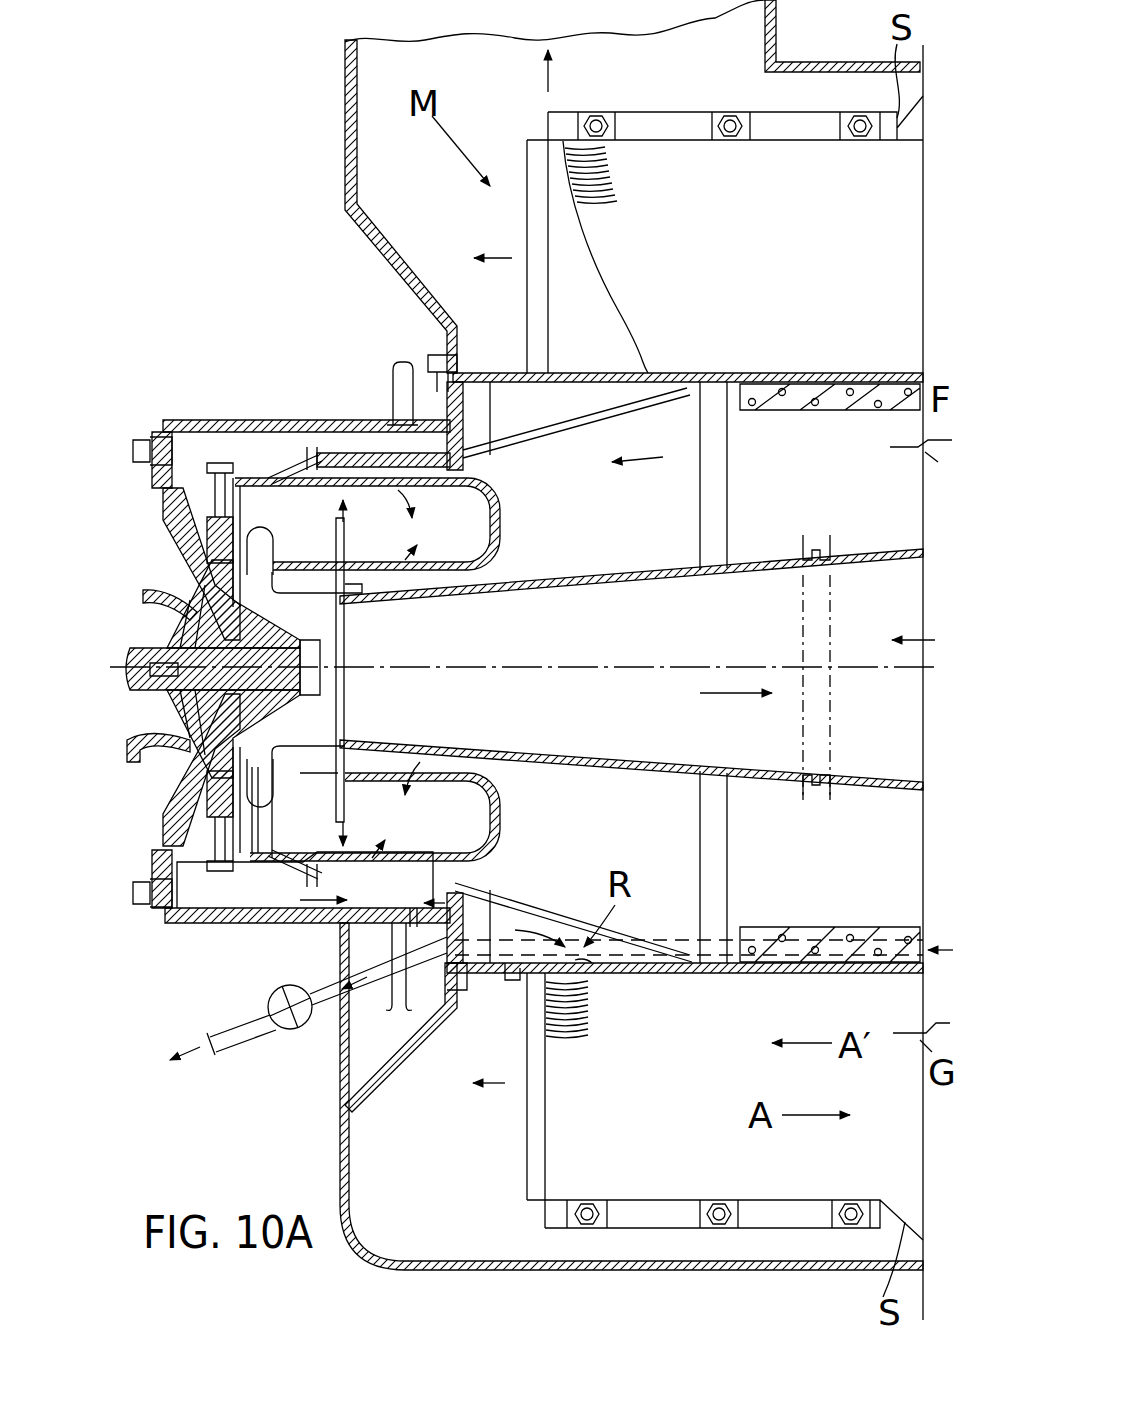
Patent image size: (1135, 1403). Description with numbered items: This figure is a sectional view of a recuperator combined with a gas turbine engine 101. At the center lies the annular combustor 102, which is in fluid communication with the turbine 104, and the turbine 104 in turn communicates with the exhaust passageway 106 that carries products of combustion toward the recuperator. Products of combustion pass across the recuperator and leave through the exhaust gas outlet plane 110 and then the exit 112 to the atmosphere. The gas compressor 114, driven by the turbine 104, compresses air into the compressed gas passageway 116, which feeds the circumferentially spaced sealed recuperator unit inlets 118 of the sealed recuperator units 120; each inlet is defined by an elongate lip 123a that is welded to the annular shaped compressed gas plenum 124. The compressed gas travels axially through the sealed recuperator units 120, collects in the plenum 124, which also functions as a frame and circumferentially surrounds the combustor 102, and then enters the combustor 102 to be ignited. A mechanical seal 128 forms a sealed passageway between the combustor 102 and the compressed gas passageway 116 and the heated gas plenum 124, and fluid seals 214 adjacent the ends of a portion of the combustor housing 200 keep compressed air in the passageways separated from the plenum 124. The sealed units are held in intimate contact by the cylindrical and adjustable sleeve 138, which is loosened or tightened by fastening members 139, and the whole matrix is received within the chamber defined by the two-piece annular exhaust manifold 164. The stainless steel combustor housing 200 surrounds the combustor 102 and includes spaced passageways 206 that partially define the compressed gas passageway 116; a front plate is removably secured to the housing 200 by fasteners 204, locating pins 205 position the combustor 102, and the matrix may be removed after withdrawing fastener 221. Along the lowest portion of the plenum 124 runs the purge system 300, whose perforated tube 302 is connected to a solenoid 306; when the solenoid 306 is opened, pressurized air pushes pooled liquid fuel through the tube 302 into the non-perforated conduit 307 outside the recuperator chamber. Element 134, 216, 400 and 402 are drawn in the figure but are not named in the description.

The gas turbine engine 101 is at (152, 628).
The annular combustor 102 is at (505, 520).
The turbine 104 is at (318, 640).
The exhaust passageway 106 is at (718, 640).
The exhaust gas outlet plane 110 is at (527, 1127).
The exit 112 is at (778, 30).
The gas compressor 114 is at (168, 703).
The compressed gas passageway 116 is at (248, 912).
The sealed recuperator unit inlet 118 is at (642, 372).
The sealed recuperator unit 120 is at (905, 247).
The elongate lip 123a is at (590, 957).
The annular shaped compressed gas plenum 124 is at (825, 495).
The mechanical seal 128 is at (355, 452).
The corner bracket 134 is at (520, 968).
The cylindrical and adjustable sleeve 138 is at (672, 112).
The fastening member 139 is at (592, 112).
The exhaust manifold 164 is at (512, 1272).
The combustor housing 200 is at (205, 392).
The fastener 204 is at (140, 440).
The locating pin 205 is at (400, 375).
The spaced passageway 206 is at (452, 884).
The fluid seal 214 is at (310, 453).
The flow inlet 216 is at (935, 640).
The fastener 221 is at (435, 358).
The purge system 300 is at (335, 975).
The perforated tube 302 is at (770, 923).
The solenoid 306 is at (280, 1033).
The non-perforated conduit 307 is at (327, 1007).
The insulation block 400 is at (758, 412).
The bracket 402 is at (826, 542).